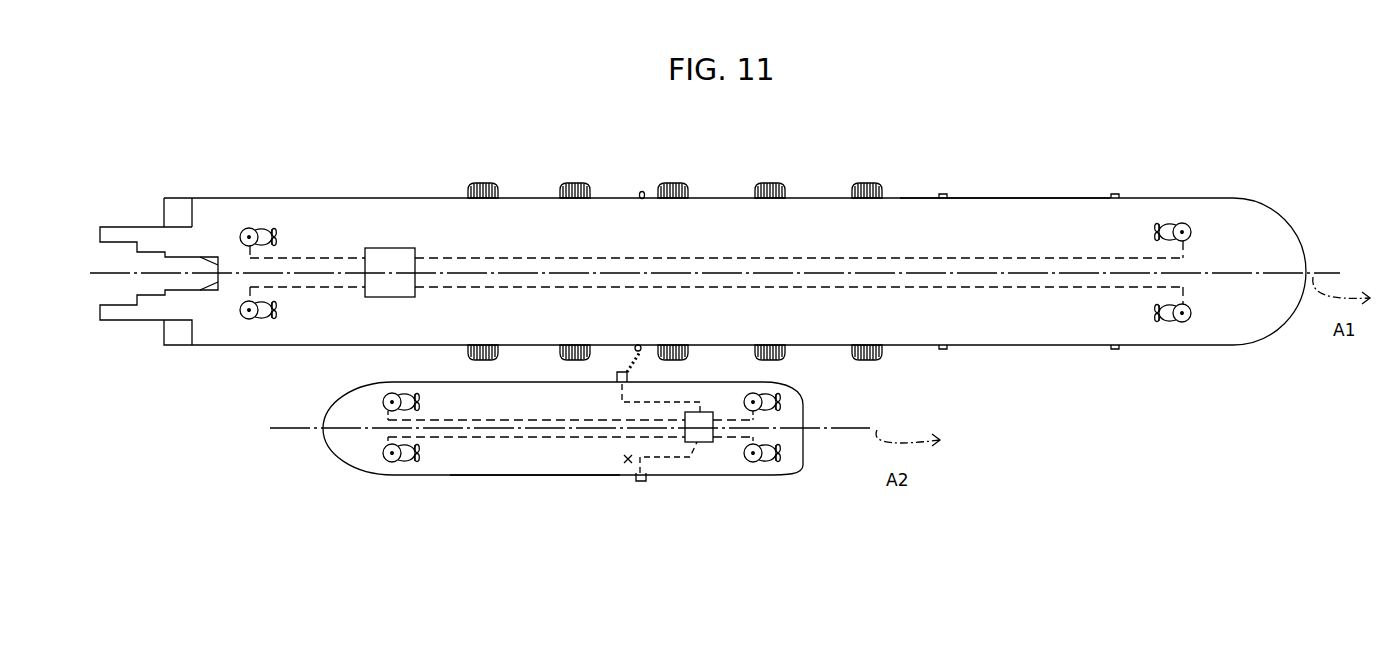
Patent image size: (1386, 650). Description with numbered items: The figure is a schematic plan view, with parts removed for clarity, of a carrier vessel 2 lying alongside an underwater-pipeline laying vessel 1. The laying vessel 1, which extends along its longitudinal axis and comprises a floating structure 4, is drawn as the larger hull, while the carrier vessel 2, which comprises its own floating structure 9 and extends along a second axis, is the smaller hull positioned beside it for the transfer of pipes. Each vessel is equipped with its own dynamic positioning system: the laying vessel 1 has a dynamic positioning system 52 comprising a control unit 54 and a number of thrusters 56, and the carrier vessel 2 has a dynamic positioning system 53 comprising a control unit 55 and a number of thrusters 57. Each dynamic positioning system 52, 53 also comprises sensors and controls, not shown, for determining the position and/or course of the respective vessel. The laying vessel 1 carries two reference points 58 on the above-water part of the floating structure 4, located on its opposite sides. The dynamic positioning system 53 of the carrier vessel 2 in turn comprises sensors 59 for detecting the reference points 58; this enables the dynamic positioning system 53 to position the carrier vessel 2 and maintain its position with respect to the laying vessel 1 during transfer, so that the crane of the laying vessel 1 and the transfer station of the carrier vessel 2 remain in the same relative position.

The laying vessel 1 is at (1142, 133).
The carrier vessel 2 is at (498, 525).
The floating structure 4 is at (1075, 198).
The floating structure 9 is at (537, 475).
The dynamic positioning system 52 is at (975, 227).
The dynamic positioning system 53 is at (628, 463).
The control unit 54 is at (392, 258).
The control unit 55 is at (705, 442).
The thrusters 56 is at (308, 172).
The thrusters 57 is at (367, 404).
The reference points 58 is at (662, 150).
The sensors 59 is at (596, 373).